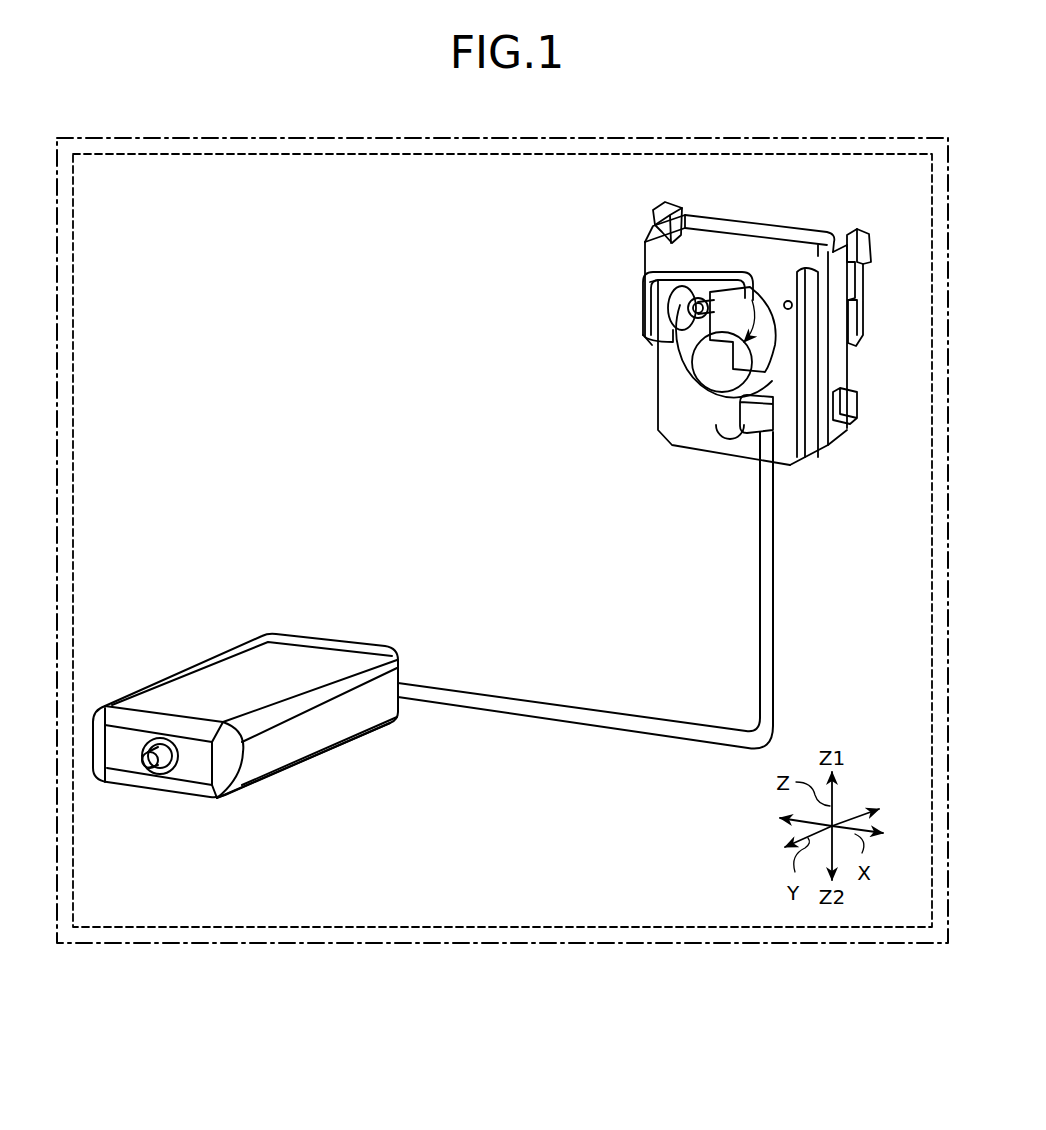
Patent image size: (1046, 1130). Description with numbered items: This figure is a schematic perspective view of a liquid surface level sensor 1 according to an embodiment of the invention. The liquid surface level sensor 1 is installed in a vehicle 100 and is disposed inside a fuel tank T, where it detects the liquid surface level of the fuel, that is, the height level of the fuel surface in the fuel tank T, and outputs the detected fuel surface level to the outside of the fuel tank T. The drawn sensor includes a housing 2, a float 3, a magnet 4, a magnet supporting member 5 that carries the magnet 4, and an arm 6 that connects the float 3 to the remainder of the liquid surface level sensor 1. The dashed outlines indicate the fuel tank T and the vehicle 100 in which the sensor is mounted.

The liquid surface level sensor 1 is at (718, 343).
The housing 2 is at (657, 393).
The float 3 is at (205, 656).
The magnet 4 is at (708, 398).
The magnet supporting member 5 is at (766, 302).
The arm 6 is at (541, 704).
The fuel tank T is at (630, 932).
The vehicle 100 is at (713, 948).